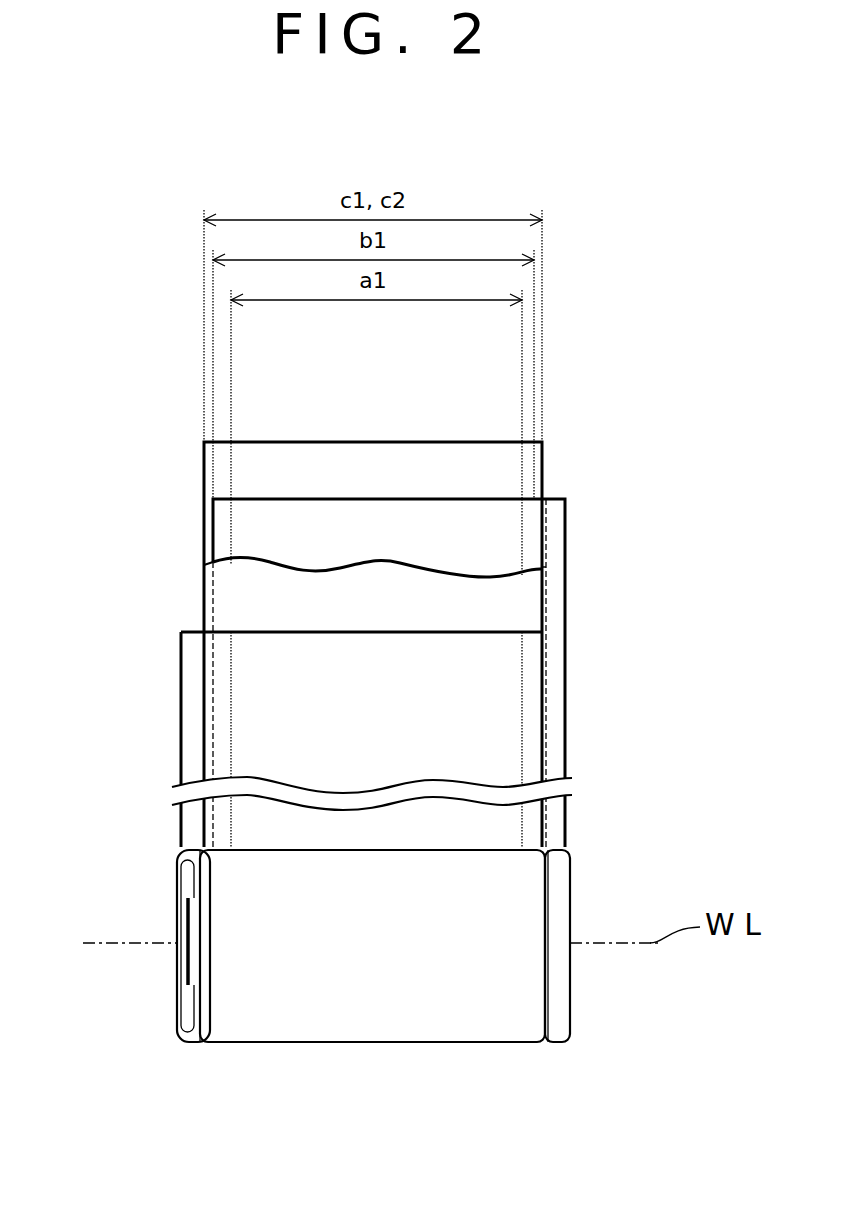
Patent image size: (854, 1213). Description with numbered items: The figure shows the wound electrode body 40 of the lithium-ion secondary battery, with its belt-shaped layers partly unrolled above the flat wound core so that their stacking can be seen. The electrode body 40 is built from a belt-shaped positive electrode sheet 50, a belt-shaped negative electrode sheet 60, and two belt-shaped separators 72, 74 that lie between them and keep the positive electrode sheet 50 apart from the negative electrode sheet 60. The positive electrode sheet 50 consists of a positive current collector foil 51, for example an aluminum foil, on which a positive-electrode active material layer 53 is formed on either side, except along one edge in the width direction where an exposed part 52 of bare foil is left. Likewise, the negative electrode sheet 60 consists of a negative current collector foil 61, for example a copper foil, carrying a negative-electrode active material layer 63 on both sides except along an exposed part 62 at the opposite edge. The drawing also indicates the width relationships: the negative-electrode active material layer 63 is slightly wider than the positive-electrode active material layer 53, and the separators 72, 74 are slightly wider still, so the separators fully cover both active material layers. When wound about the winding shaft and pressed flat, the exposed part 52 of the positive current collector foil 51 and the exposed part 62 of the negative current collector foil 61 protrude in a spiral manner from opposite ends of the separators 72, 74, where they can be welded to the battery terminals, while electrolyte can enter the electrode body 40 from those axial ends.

The electrode body 40 is at (410, 1015).
The positive electrode sheet 50 is at (181, 687).
The positive current collector foil 51 is at (362, 631).
The exposed part 52 is at (195, 748).
The positive-electrode active material layer 53 is at (263, 733).
The negative electrode sheet 60 is at (569, 511).
The negative current collector foil 61 is at (362, 498).
The exposed part 62 is at (552, 550).
The negative-electrode active material layer 63 is at (470, 512).
The separator 72 is at (222, 469).
The separator 74 is at (222, 605).